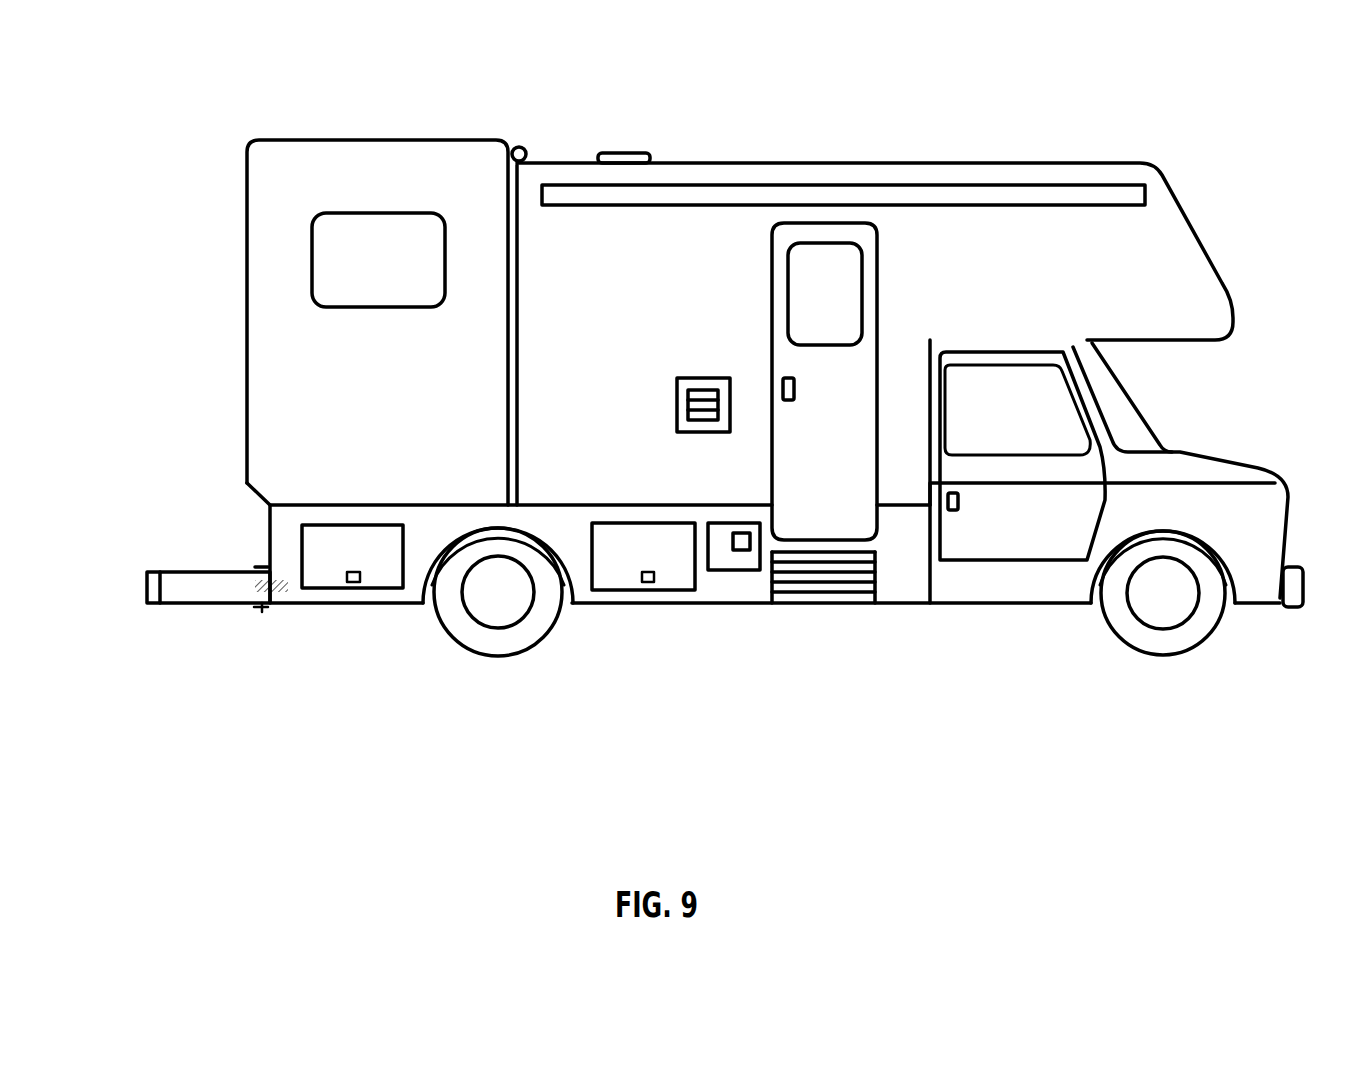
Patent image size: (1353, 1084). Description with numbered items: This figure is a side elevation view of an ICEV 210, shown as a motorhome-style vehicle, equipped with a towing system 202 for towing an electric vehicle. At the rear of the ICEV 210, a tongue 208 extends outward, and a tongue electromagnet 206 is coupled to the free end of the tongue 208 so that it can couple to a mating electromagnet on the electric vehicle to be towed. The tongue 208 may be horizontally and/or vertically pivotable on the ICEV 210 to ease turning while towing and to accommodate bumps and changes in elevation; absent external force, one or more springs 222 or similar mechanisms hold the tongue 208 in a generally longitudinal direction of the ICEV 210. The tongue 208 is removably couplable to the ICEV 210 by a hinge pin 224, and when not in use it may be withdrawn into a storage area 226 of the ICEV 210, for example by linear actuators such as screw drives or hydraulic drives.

The towing system 202 is at (701, 393).
The tongue electromagnet 206 is at (160, 583).
The tongue 208 is at (204, 578).
The ICEV 210 is at (736, 168).
The springs 222 is at (282, 590).
The hinge pin 224 is at (262, 606).
The storage area 226 is at (332, 590).